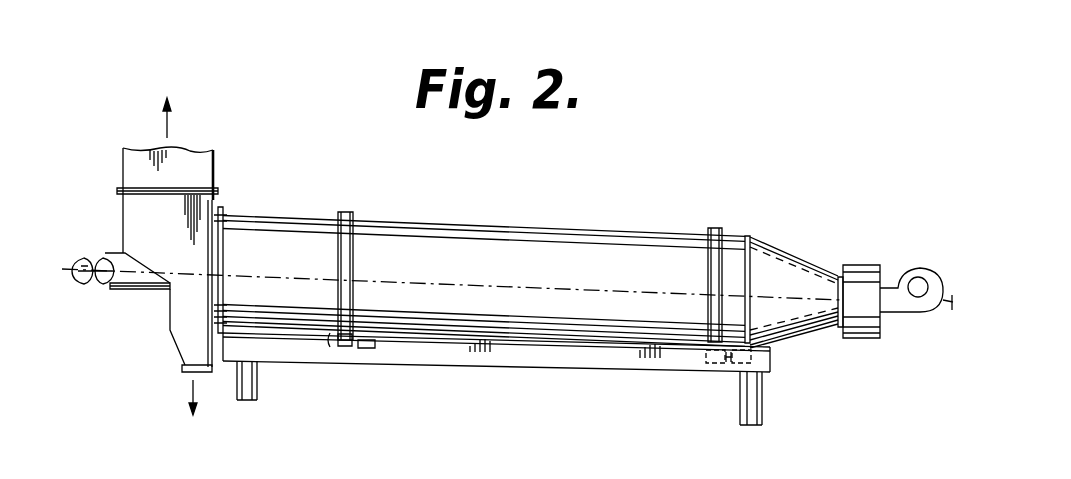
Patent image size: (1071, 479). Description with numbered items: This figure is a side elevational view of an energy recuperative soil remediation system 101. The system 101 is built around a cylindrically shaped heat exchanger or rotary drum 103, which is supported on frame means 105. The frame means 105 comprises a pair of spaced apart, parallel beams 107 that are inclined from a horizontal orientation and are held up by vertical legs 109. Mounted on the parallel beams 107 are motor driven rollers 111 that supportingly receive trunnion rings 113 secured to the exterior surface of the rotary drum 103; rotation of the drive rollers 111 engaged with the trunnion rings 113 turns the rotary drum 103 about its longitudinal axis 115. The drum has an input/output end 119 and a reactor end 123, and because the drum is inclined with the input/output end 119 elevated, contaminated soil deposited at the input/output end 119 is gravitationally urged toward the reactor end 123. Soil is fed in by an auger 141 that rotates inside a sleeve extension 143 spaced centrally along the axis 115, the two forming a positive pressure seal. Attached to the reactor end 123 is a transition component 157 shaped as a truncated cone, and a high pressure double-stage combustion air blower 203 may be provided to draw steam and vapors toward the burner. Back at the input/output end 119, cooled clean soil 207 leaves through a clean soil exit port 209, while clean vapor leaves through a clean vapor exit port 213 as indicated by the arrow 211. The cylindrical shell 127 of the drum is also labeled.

The energy recuperative soil remediation system 101 is at (672, 196).
The rotary drum 103 is at (484, 269).
The frame means 105 is at (496, 368).
The parallel beams 107 is at (452, 352).
The vertical legs 109 is at (254, 393).
The motor driven rollers 111 is at (345, 350).
The trunnion rings 113 is at (345, 212).
The axis 115 is at (568, 288).
The input/output end 119 is at (225, 215).
The reactor end 123 is at (749, 237).
The cylindrical shell 127 is at (440, 224).
The auger 141 is at (99, 286).
The sleeve extension 143 is at (157, 296).
The transition component 157 is at (793, 338).
The combustion air blower 203 is at (932, 274).
The clean soil 207 is at (193, 393).
The clean soil exit port 209 is at (182, 358).
The arrow 211 is at (167, 123).
The clean vapor exit port 213 is at (210, 202).